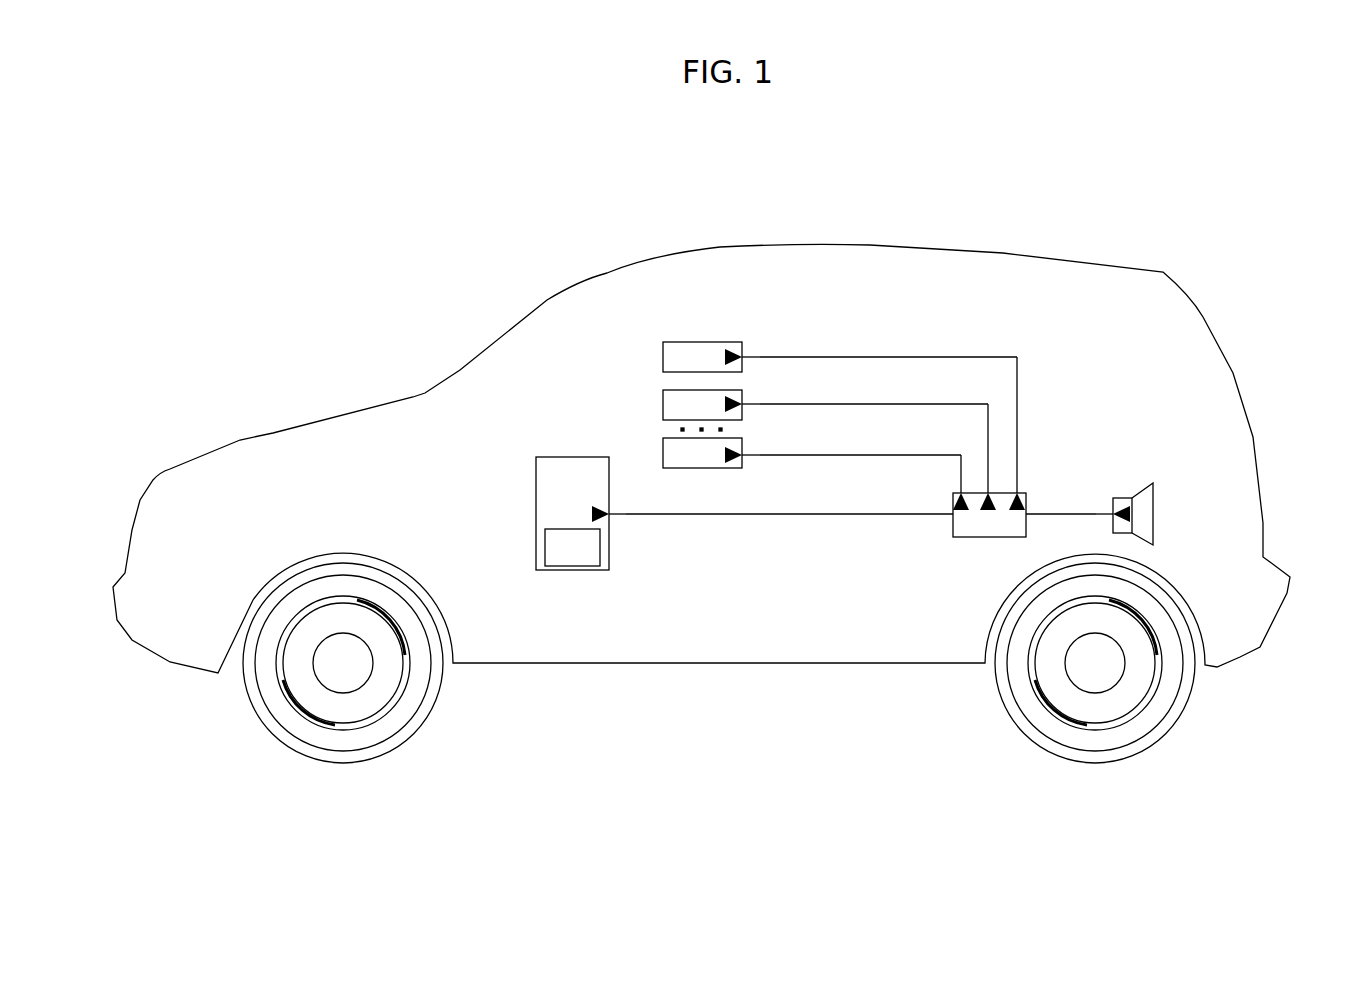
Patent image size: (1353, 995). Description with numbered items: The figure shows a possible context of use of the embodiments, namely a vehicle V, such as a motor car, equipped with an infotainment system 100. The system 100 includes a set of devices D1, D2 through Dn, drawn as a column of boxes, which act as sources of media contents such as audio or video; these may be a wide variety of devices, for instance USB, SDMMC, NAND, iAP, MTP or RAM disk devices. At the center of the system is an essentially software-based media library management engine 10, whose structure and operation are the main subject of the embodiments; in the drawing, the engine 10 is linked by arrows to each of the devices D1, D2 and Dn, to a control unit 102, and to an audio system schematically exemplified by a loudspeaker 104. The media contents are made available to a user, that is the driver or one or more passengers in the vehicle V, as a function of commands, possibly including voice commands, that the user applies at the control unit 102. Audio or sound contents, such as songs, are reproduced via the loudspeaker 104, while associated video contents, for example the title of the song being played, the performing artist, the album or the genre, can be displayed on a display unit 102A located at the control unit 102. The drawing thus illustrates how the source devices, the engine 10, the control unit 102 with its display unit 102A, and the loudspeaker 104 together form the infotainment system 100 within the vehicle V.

The vehicle V is at (287, 448).
The device D1 is at (694, 341).
The device D2 is at (671, 403).
The device Dn is at (662, 450).
The control unit 102 is at (553, 478).
The display unit 102A is at (557, 548).
The media library management engine 10 is at (978, 538).
The loudspeaker 104 is at (1124, 478).
The infotainment system 100 is at (681, 562).